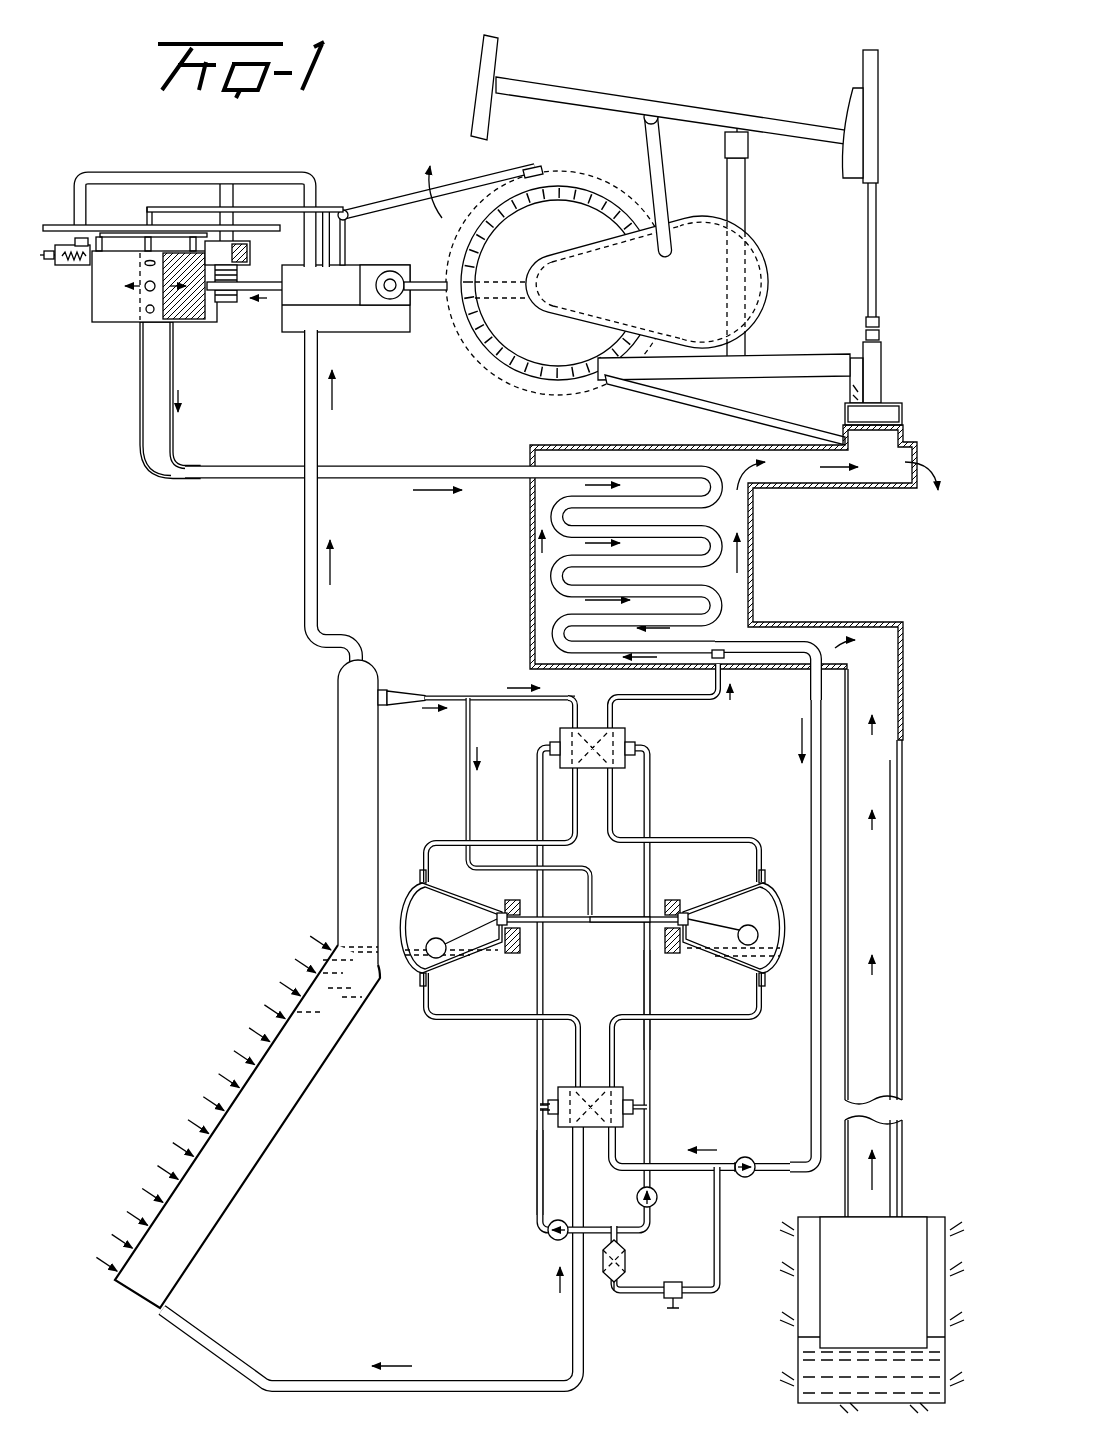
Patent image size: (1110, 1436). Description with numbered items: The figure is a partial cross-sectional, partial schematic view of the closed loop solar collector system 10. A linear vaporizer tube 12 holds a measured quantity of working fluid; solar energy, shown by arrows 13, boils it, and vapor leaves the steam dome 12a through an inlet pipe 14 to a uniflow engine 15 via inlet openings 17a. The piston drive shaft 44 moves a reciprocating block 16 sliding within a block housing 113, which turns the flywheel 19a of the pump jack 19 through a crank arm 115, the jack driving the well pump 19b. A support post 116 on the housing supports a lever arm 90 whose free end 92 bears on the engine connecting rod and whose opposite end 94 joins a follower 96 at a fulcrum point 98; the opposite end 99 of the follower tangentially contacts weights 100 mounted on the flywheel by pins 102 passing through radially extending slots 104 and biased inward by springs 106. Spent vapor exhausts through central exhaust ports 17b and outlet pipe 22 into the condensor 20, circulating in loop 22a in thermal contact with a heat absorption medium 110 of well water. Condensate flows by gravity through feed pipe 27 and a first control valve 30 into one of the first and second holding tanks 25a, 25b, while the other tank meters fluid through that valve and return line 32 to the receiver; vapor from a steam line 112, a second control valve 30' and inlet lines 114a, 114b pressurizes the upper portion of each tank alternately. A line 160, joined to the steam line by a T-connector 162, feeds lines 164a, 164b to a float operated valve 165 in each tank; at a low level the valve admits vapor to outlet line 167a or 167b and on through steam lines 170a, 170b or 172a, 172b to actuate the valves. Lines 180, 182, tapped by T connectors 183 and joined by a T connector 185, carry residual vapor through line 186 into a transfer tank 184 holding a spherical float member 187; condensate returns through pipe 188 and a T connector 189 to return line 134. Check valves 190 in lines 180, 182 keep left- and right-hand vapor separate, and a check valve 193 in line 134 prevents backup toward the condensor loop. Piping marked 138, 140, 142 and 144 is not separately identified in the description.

The closed loop solar collector system 10 is at (125, 632).
The vaporizer tube 12 is at (300, 1126).
The steam dome 12a is at (325, 729).
The arrows indicating solar energy 13 is at (263, 998).
The inlet pipe 14 is at (303, 512).
The uniflow engine 15 is at (98, 333).
The reciprocating block 16 is at (372, 307).
The inlet openings 17a is at (76, 247).
The central exhaust ports 17b is at (152, 314).
The pump jack 19 is at (650, 62).
The flywheel 19a is at (483, 379).
The well pump 19b is at (905, 1230).
The condensor 20 is at (528, 560).
The outlet pipe 22 is at (366, 463).
The condensor loop 22a is at (628, 497).
The first holding tank 25a is at (402, 989).
The second holding tank 25b is at (776, 986).
The feed pipe 27 is at (811, 790).
The first control valve 30 is at (624, 1104).
The second control valve 30' is at (633, 739).
The return line 32 is at (445, 1379).
The piston drive shaft 44 is at (245, 292).
The lever arm 90 is at (293, 205).
The free end 92 is at (147, 211).
The opposite end 94 is at (325, 208).
The follower 96 is at (398, 200).
The fulcrum point 98 is at (345, 210).
The opposite end of follower 99 is at (537, 166).
The weights 100 is at (598, 204).
The pins 102 is at (515, 216).
The radially extending slots 104 is at (485, 236).
The springs 106 is at (498, 318).
The heat absorption medium 110 is at (745, 631).
The steam line 112 is at (434, 694).
The block housing 113 is at (366, 267).
The inlet line 114a is at (492, 839).
The inlet line 114b is at (685, 838).
The crank arm 115 is at (428, 292).
The support post 116 is at (346, 235).
The return line 134 is at (662, 1161).
The discharge line 138 is at (572, 1137).
The left accumulator bottom line 140 is at (430, 1021).
The right accumulator bottom line 142 is at (708, 1022).
The heat exchanger line 144 is at (640, 695).
The line 160 is at (462, 732).
The T-connector 162 is at (465, 692).
The line 164a is at (562, 924).
The line 164b is at (612, 914).
The float operated valve 165 is at (490, 952).
The outlet line 167a is at (505, 955).
The outlet line 167b is at (667, 956).
The steam line 170a is at (537, 1033).
The steam line 170b is at (537, 772).
The steam line 172a is at (643, 983).
The steam line 172b is at (651, 863).
The transfer line 180 is at (537, 1176).
The transfer line 182 is at (644, 1178).
The T connectors 183 is at (540, 1107).
The transfer tank 184 is at (630, 1266).
The T connector 185 is at (613, 1234).
The line 186 is at (624, 1238).
The spherical float member 187 is at (605, 1272).
The pipe 188 is at (721, 1271).
The T connector 189 is at (722, 1163).
The check valves 190 is at (549, 1236).
The check valve 193 is at (752, 1172).